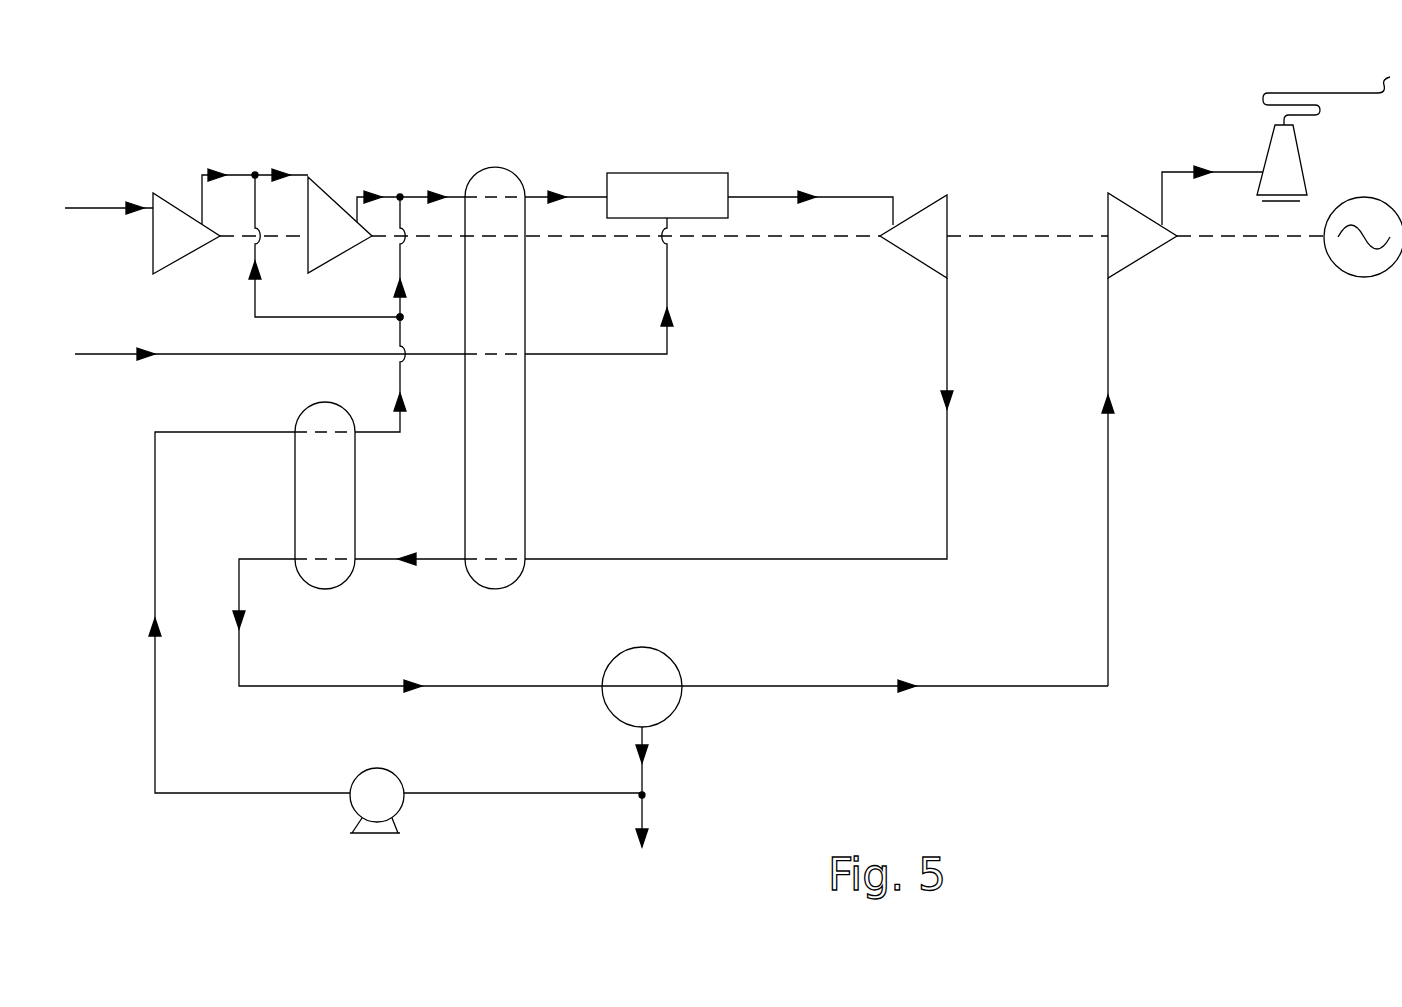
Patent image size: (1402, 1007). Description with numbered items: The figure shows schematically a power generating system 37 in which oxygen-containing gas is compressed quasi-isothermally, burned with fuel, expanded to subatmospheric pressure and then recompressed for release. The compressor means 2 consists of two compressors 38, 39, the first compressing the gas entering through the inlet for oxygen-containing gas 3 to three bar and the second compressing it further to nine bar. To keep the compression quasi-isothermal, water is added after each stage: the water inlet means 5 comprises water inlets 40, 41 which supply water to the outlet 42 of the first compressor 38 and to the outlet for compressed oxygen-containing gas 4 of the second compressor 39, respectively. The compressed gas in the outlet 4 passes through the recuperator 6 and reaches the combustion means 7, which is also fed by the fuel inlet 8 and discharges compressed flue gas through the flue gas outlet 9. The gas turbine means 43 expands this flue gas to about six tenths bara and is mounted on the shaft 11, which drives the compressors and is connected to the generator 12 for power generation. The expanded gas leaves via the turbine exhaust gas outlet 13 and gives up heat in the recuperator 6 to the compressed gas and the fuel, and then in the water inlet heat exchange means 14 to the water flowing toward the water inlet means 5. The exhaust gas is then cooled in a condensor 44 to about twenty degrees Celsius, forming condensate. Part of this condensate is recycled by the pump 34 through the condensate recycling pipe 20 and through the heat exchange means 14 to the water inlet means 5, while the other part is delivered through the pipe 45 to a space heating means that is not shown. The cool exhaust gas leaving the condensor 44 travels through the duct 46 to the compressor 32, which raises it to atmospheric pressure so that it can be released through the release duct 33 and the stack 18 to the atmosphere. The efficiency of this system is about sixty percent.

The compressor means 2 is at (248, 157).
The inlet for oxygen-containing gas 3 is at (97, 208).
The outlet for compressed oxygen-containing gas 4 is at (457, 197).
The water inlet means 5 is at (410, 310).
The recuperator 6 is at (527, 442).
The combustion means 7 is at (703, 173).
The fuel inlet 8 is at (248, 357).
The flue gas outlet 9 is at (862, 197).
The shaft 11 is at (817, 237).
The generator 12 is at (1355, 273).
The turbine exhaust gas outlet 13 is at (950, 362).
The water inlet heat exchange means 14 is at (293, 511).
The stack 18 is at (1308, 180).
The condensate recycling pipe 20 is at (160, 697).
The compressor 32 is at (1142, 262).
The release duct 33 is at (1233, 172).
The pump 34 is at (387, 769).
The power generating system 37 is at (1101, 734).
The compressor 38 is at (187, 213).
The compressor 39 is at (327, 203).
The water inlet 40 is at (253, 302).
The water inlet 41 is at (397, 262).
The outlet of the compressor 42 is at (213, 196).
The gas turbine means 43 is at (918, 212).
The condensor 44 is at (677, 662).
The pipe 45 is at (645, 805).
The duct 46 is at (1049, 688).